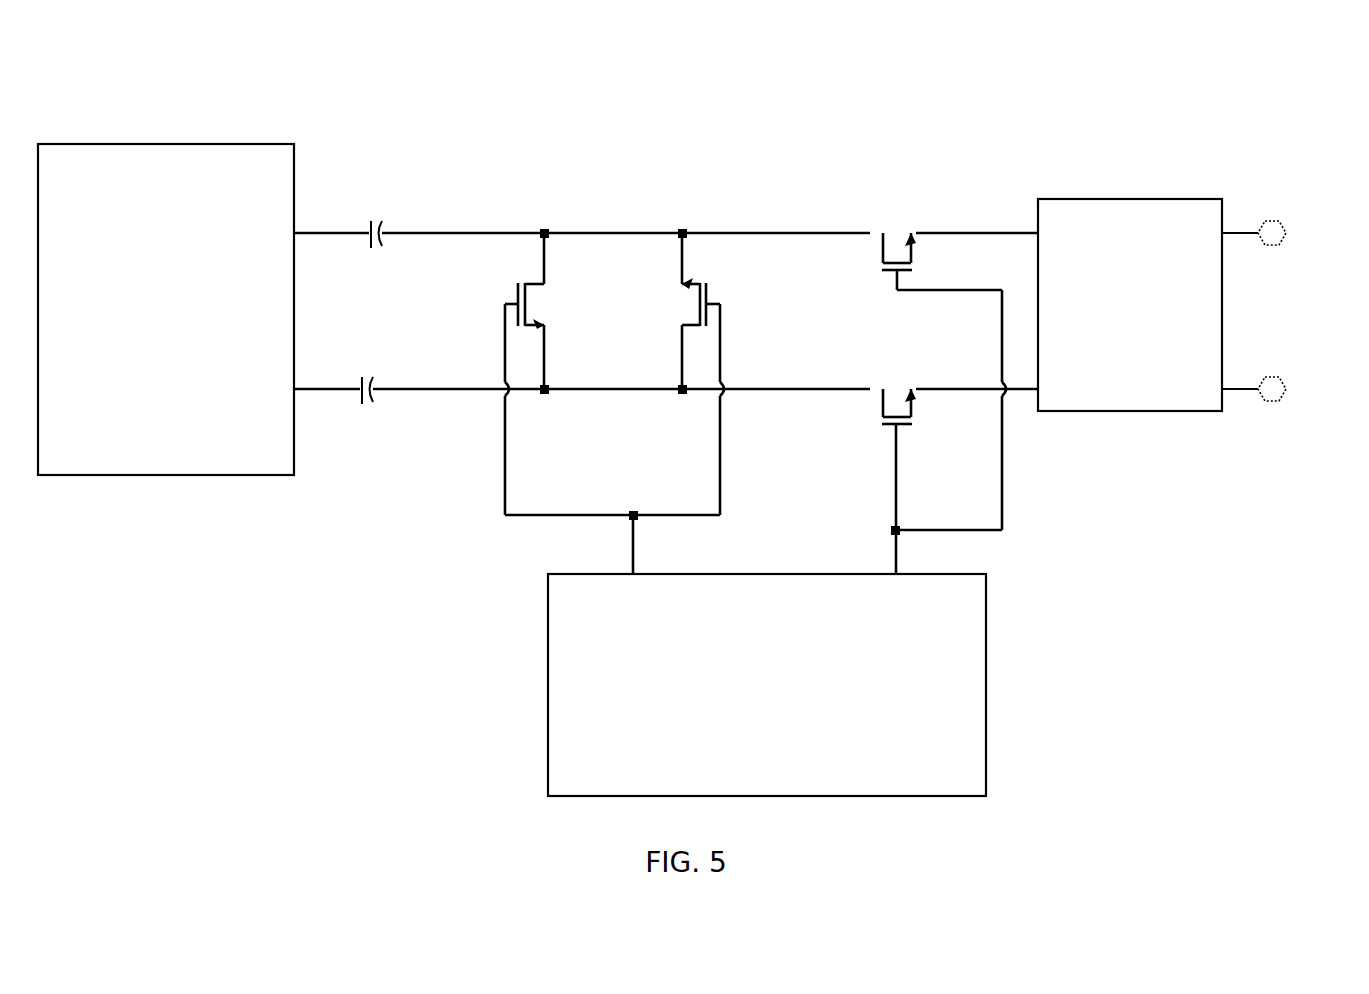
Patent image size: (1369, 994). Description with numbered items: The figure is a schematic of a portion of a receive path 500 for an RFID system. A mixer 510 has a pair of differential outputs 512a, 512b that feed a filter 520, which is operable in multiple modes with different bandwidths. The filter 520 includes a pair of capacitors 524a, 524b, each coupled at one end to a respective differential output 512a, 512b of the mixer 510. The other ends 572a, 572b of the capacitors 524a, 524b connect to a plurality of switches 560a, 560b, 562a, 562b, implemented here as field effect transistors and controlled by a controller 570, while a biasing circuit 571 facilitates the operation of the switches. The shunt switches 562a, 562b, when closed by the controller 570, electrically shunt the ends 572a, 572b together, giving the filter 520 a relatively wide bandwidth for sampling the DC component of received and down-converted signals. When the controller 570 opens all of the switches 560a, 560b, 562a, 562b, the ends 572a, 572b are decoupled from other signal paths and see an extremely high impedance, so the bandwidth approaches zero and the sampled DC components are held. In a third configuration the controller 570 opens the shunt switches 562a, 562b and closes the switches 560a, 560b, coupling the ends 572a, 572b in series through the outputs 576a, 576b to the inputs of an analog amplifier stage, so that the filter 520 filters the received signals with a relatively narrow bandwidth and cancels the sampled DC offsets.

The receive path 500 is at (1202, 94).
The mixer 510 is at (248, 144).
The differential output 512a is at (313, 235).
The differential output 512b is at (318, 391).
The filter 520 is at (431, 518).
The capacitor 524a is at (367, 228).
The capacitor 524b is at (356, 380).
The capacitor end 572a is at (460, 233).
The capacitor end 572b is at (437, 388).
The shunt switch 562a is at (537, 282).
The shunt switch 562b is at (690, 283).
The switch 560a is at (880, 252).
The switch 560b is at (880, 402).
The biasing circuit 571 is at (1180, 198).
The output 576a is at (1238, 233).
The output 576b is at (1241, 391).
The controller 570 is at (937, 796).